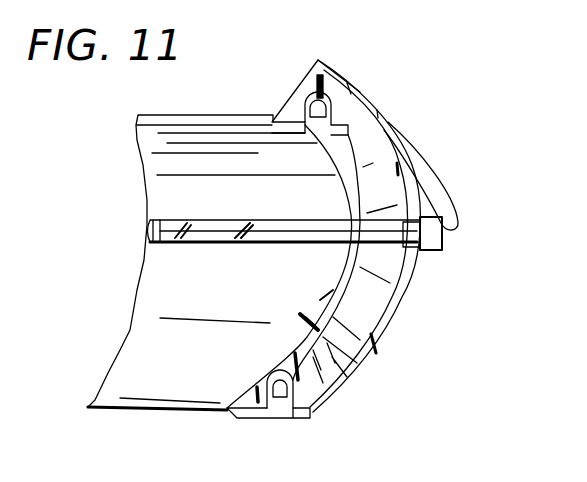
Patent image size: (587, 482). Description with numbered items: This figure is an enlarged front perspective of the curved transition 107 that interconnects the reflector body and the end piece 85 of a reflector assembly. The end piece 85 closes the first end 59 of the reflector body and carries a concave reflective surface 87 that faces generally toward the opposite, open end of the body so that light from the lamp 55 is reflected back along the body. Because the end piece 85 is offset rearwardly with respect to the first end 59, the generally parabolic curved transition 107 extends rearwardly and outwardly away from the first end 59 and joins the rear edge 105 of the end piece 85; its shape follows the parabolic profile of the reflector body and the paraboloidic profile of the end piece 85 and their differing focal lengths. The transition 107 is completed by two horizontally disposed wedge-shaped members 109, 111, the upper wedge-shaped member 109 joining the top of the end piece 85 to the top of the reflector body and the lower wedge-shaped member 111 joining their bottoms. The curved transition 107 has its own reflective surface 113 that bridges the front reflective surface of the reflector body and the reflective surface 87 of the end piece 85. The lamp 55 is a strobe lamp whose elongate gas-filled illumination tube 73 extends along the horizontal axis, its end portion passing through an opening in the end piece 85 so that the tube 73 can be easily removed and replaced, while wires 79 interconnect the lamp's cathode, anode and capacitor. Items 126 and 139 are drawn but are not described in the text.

The lamp 55 is at (240, 252).
The first end 59 is at (333, 150).
The illumination tube 73 is at (170, 221).
The wires 79 is at (447, 185).
The end piece 85 is at (371, 337).
The concave reflective surface 87 is at (368, 304).
The rear edge 105 is at (313, 347).
The curved transition 107 is at (352, 178).
The wedge-shaped member 109 is at (295, 106).
The wedge-shaped member 111 is at (231, 412).
The reflective surface 113 is at (321, 299).
The nut 126 is at (447, 240).
The slot 139 is at (333, 118).